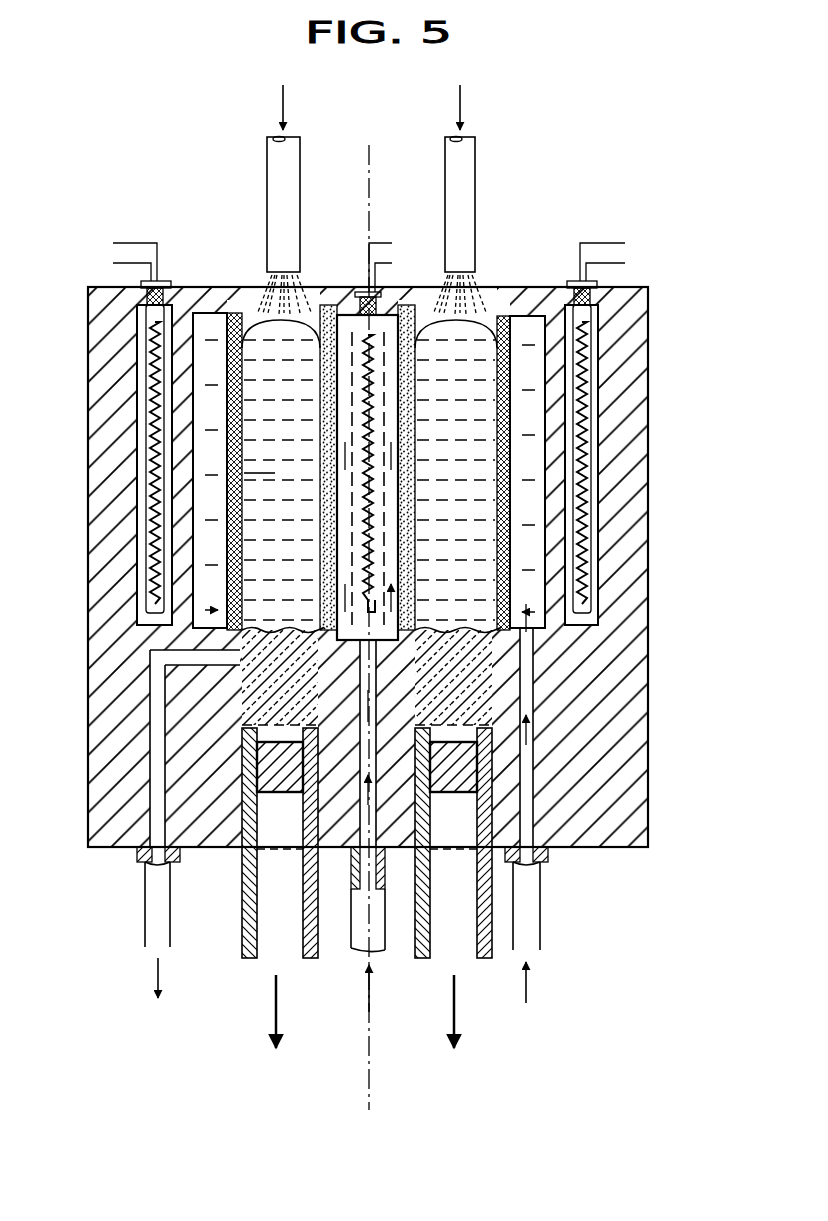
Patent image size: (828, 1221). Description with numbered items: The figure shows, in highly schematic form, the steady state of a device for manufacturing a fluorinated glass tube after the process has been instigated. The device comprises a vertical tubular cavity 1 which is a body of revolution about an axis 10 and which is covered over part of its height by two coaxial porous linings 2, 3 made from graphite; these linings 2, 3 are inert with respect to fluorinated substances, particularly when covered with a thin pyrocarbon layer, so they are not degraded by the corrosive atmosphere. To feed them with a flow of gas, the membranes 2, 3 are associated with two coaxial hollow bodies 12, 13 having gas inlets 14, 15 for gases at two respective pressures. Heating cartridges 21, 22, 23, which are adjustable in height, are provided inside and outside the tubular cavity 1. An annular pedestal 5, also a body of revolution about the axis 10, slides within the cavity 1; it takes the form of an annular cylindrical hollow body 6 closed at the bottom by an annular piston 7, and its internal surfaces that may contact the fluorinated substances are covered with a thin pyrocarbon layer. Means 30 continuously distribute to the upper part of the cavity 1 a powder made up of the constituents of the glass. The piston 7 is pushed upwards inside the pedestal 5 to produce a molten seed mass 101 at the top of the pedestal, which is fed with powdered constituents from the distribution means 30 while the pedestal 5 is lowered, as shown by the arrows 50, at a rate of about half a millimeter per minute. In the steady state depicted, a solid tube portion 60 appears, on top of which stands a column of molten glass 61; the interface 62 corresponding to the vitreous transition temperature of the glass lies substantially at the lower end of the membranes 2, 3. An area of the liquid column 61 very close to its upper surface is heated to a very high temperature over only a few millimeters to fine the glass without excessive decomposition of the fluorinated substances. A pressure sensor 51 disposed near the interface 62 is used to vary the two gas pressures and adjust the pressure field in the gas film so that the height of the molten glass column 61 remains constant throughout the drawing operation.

The vertical tubular cavity 1 is at (482, 292).
The porous lining 2 is at (235, 322).
The porous lining 3 is at (327, 335).
The annular pedestal 5 is at (254, 960).
The annular cylindrical hollow body 6 is at (251, 897).
The annular piston 7 is at (283, 781).
The axis 10 is at (369, 161).
The coaxial hollow body 12 is at (206, 326).
The coaxial hollow body 13 is at (387, 335).
The gas inlet 14 is at (363, 942).
The gas inlet 15 is at (539, 928).
The heating cartridge 21 is at (156, 468).
The heating cartridge 22 is at (586, 441).
The heating cartridge 23 is at (372, 405).
The powder distributing means 30 is at (269, 212).
The arrows 50 is at (280, 1003).
The pressure sensor 51 is at (156, 905).
The solid tube portion 60 is at (268, 698).
The column of molten glass 61 is at (275, 473).
The interface 62 is at (292, 626).
The molten seed mass 101 is at (301, 345).